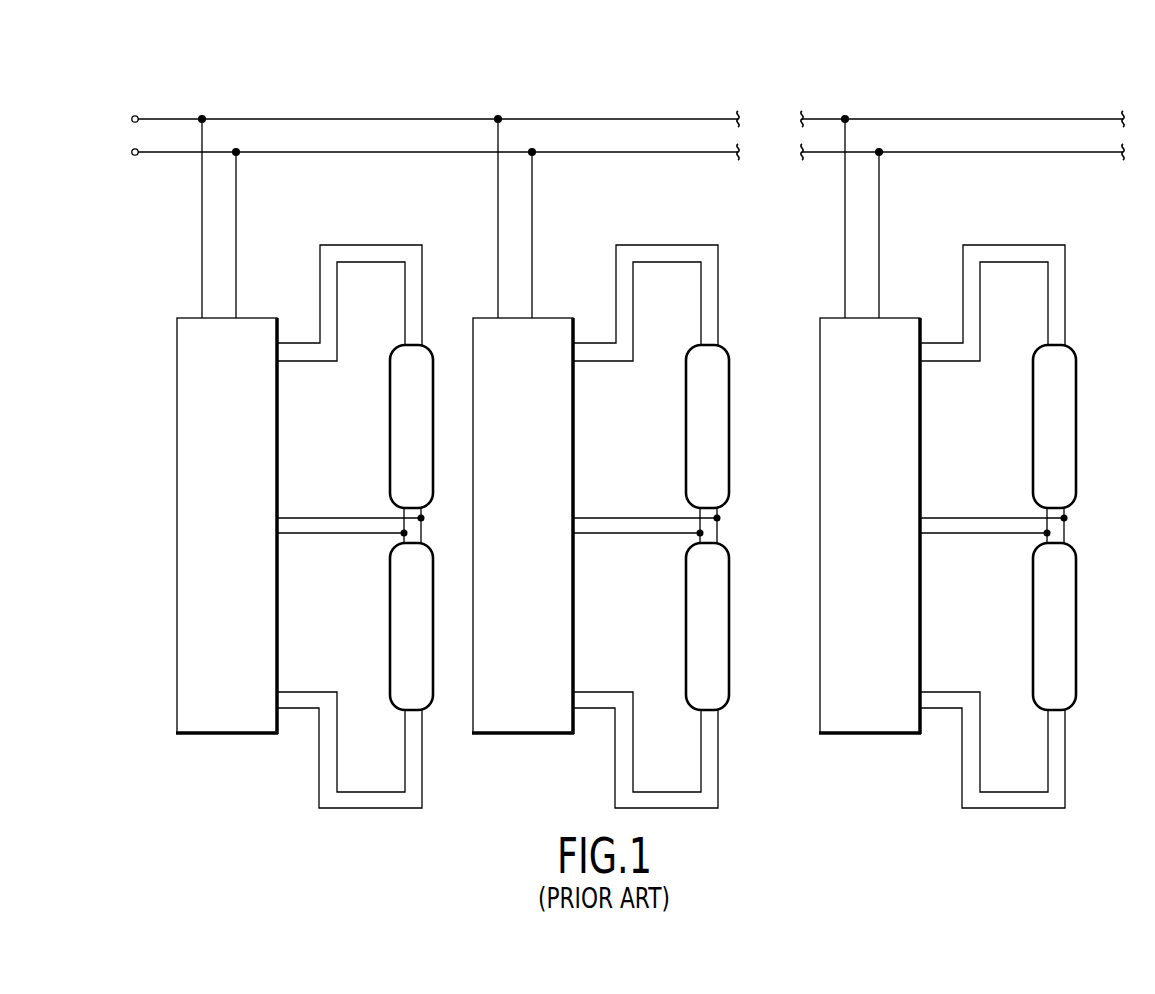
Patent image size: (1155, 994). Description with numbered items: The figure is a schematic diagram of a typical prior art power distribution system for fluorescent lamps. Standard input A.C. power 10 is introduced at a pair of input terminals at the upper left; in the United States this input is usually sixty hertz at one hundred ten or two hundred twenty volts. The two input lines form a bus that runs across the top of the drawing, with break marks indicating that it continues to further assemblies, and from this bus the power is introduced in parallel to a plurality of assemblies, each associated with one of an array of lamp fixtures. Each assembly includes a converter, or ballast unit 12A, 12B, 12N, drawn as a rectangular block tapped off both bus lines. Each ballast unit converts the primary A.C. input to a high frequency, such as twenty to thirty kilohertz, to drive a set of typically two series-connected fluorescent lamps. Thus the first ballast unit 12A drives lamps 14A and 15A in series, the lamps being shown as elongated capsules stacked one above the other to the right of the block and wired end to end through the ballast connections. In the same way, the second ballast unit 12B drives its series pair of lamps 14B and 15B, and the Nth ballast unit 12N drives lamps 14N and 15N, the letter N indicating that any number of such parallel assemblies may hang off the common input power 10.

The standard input A.C. power 10 is at (183, 102).
The ballast unit 12A is at (177, 318).
The ballast unit 12B is at (553, 318).
The ballast unit 12N is at (893, 319).
The fluorescent lamp 14A is at (447, 340).
The fluorescent lamp 14B is at (730, 440).
The fluorescent lamp 14N is at (1078, 423).
The fluorescent lamp 15A is at (430, 712).
The fluorescent lamp 15B is at (730, 640).
The fluorescent lamp 15N is at (1078, 622).